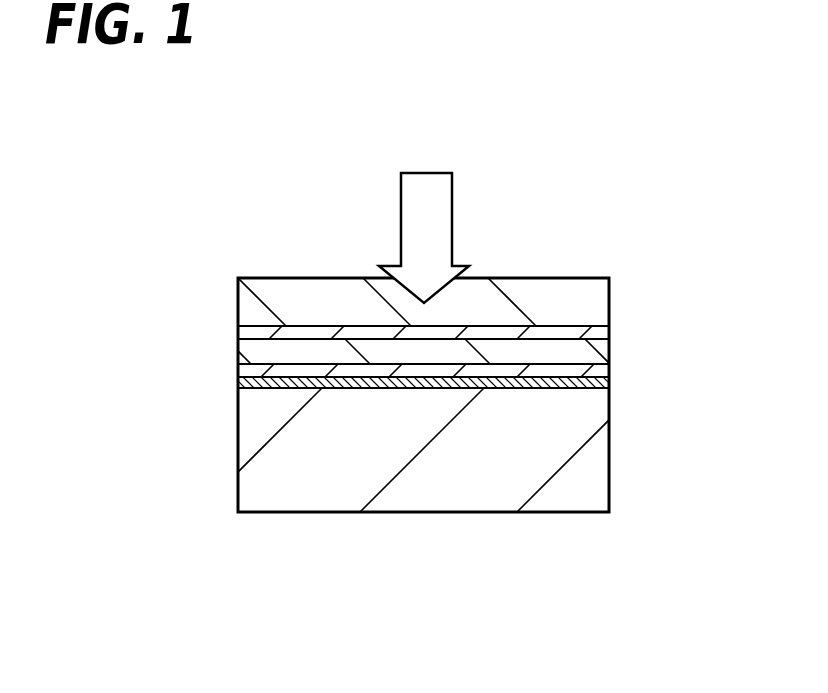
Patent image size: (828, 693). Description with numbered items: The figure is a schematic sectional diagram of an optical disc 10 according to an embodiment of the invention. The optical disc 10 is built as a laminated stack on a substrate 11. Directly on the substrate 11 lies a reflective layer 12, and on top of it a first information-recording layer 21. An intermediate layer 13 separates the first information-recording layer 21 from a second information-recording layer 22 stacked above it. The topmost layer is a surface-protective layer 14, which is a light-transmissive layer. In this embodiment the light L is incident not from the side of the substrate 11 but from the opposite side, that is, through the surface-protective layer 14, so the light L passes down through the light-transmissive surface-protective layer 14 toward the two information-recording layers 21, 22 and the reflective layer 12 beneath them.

The optical disc 10 is at (560, 609).
The substrate 11 is at (595, 471).
The reflective layer 12 is at (607, 392).
The first information-recording layer 21 is at (592, 373).
The intermediate layer 13 is at (592, 350).
The second information-recording layer 22 is at (613, 330).
The surface-protective layer 14 is at (595, 297).
The light L is at (452, 209).